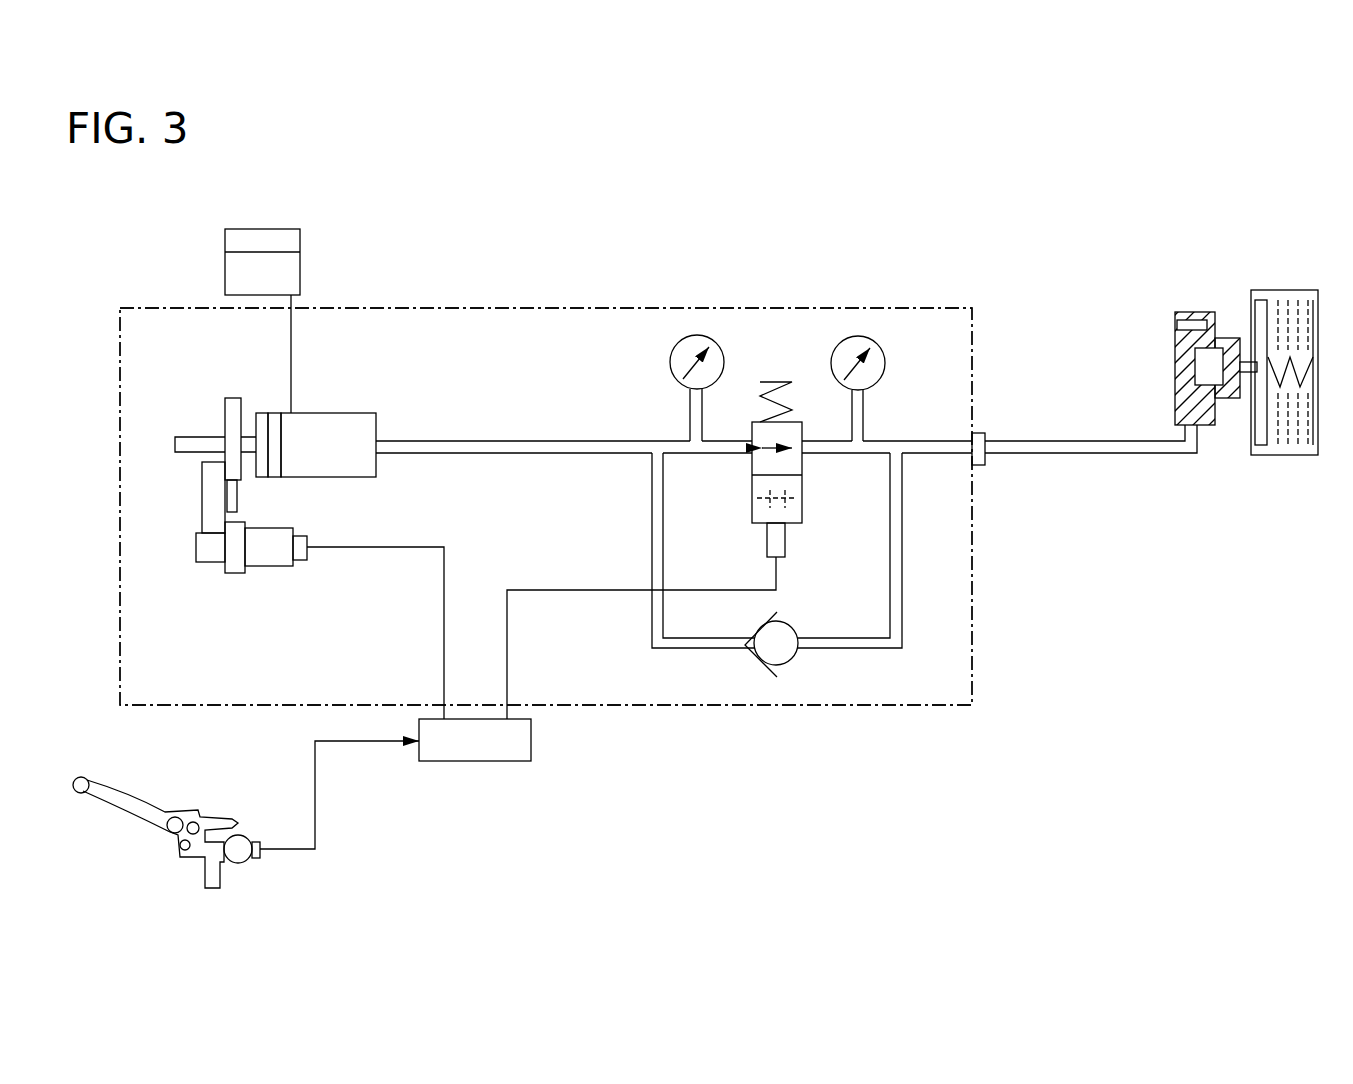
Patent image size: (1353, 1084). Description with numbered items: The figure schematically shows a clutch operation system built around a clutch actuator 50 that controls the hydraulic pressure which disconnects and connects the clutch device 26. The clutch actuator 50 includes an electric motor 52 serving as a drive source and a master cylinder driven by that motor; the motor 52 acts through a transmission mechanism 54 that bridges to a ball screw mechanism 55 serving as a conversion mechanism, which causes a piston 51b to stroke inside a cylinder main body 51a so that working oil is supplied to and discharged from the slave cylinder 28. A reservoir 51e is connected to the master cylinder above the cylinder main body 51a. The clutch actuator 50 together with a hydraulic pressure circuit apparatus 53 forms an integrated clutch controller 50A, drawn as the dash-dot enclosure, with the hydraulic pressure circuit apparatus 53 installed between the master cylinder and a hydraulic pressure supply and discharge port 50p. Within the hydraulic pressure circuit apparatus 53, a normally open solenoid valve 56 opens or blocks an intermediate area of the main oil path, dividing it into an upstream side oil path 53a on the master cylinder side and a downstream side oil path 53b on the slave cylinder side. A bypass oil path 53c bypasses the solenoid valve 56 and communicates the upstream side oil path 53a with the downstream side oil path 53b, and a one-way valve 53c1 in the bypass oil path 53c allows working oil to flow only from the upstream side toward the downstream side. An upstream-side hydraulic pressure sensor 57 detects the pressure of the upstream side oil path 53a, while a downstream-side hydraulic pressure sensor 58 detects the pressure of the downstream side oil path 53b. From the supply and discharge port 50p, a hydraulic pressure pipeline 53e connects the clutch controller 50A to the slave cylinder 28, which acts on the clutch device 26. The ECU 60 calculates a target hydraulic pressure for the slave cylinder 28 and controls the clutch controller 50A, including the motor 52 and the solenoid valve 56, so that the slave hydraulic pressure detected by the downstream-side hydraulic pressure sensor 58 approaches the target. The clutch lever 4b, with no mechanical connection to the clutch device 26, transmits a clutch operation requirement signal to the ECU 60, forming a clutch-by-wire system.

The clutch lever 4b is at (128, 822).
The clutch device 26 is at (1307, 290).
The slave cylinder 28 is at (1192, 312).
The clutch actuator 50 is at (188, 342).
The clutch controller 50A is at (400, 308).
The hydraulic pressure supply and discharge port 50p is at (980, 468).
The cylinder main body 51a is at (340, 413).
The piston 51b is at (277, 458).
The reservoir 51e is at (271, 229).
The electric motor 52 is at (268, 568).
The hydraulic pressure circuit apparatus 53 is at (674, 518).
The upstream side oil path 53a is at (496, 441).
The downstream side oil path 53b is at (908, 441).
The bypass oil path 53c is at (868, 648).
The one-way valve 53c1 is at (788, 672).
The hydraulic pressure pipeline 53e is at (1055, 441).
The transmission mechanism 54 is at (204, 495).
The ball screw mechanism 55 is at (228, 406).
The solenoid valve 56 is at (805, 527).
The upstream-side hydraulic pressure sensor 57 is at (672, 358).
The downstream-side hydraulic pressure sensor 58 is at (833, 358).
The ECU 60 is at (470, 762).